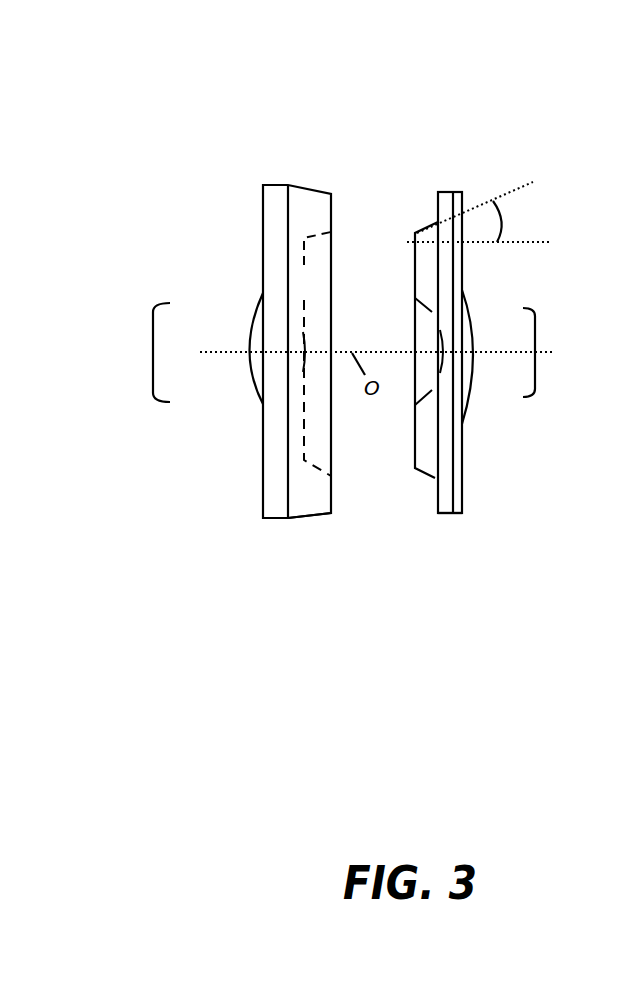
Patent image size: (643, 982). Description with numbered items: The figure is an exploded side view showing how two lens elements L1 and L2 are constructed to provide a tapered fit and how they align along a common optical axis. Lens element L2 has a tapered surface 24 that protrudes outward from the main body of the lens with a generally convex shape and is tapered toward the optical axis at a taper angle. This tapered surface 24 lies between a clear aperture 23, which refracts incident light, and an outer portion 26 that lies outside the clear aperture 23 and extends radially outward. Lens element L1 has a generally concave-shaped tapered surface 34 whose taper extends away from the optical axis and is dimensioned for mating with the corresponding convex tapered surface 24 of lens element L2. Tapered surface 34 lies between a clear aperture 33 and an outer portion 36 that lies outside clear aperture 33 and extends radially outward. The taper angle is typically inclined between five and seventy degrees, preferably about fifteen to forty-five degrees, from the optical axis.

The lens element L1 is at (272, 493).
The lens element L2 is at (445, 472).
The clear aperture 23 is at (535, 355).
The tapered surface 24 is at (423, 230).
The outer portion 26 is at (443, 513).
The clear aperture 33 is at (153, 382).
The tapered surface 34 is at (323, 233).
The outer portion 36 is at (320, 513).